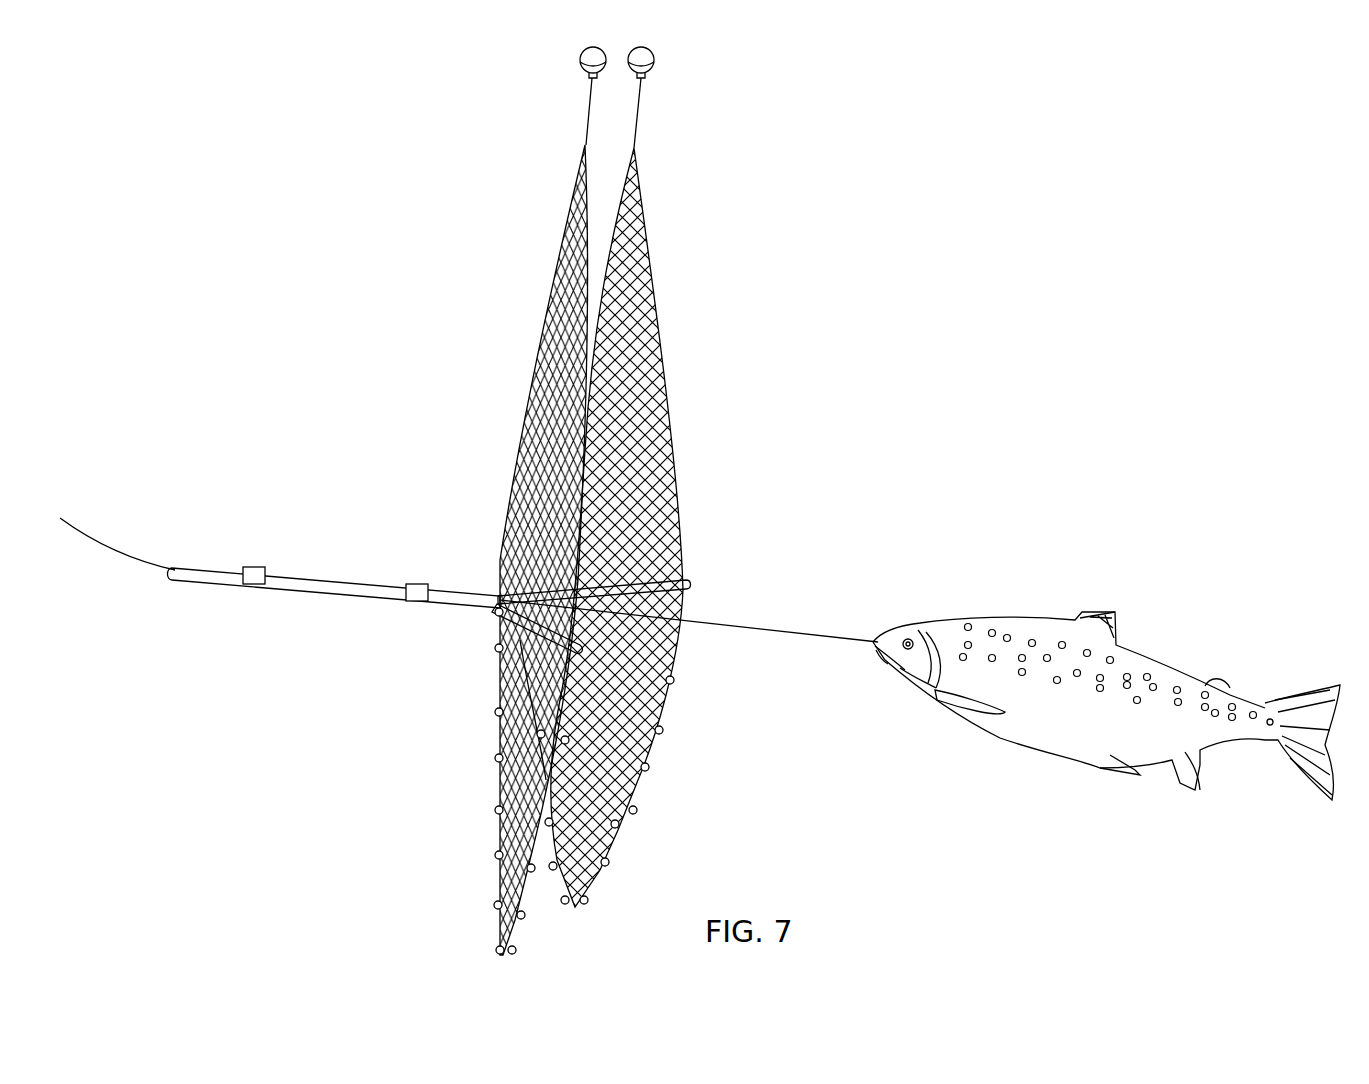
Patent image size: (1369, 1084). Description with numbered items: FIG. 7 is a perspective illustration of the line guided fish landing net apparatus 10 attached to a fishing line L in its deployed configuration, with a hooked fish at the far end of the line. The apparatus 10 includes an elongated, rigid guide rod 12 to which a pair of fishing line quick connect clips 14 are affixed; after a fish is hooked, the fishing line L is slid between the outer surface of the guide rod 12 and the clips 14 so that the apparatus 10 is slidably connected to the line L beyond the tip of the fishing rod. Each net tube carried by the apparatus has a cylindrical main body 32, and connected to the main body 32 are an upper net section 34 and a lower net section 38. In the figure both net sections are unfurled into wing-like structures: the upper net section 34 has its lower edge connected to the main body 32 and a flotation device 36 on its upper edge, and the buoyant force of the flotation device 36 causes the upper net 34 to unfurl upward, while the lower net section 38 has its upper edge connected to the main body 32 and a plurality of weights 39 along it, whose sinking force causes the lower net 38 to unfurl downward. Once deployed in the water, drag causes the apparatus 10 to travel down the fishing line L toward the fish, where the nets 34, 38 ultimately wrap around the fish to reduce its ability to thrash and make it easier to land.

The line guided fish landing net apparatus 10 is at (358, 200).
The guide rod 12 is at (362, 590).
The fishing line quick connect clip 14 is at (256, 566).
The cylindrical main body 32 is at (690, 583).
The upper net section 34 is at (555, 292).
The flotation device 36 is at (580, 62).
The lower net section 38 is at (500, 882).
The weight 39 is at (500, 805).
The fishing line L is at (780, 630).